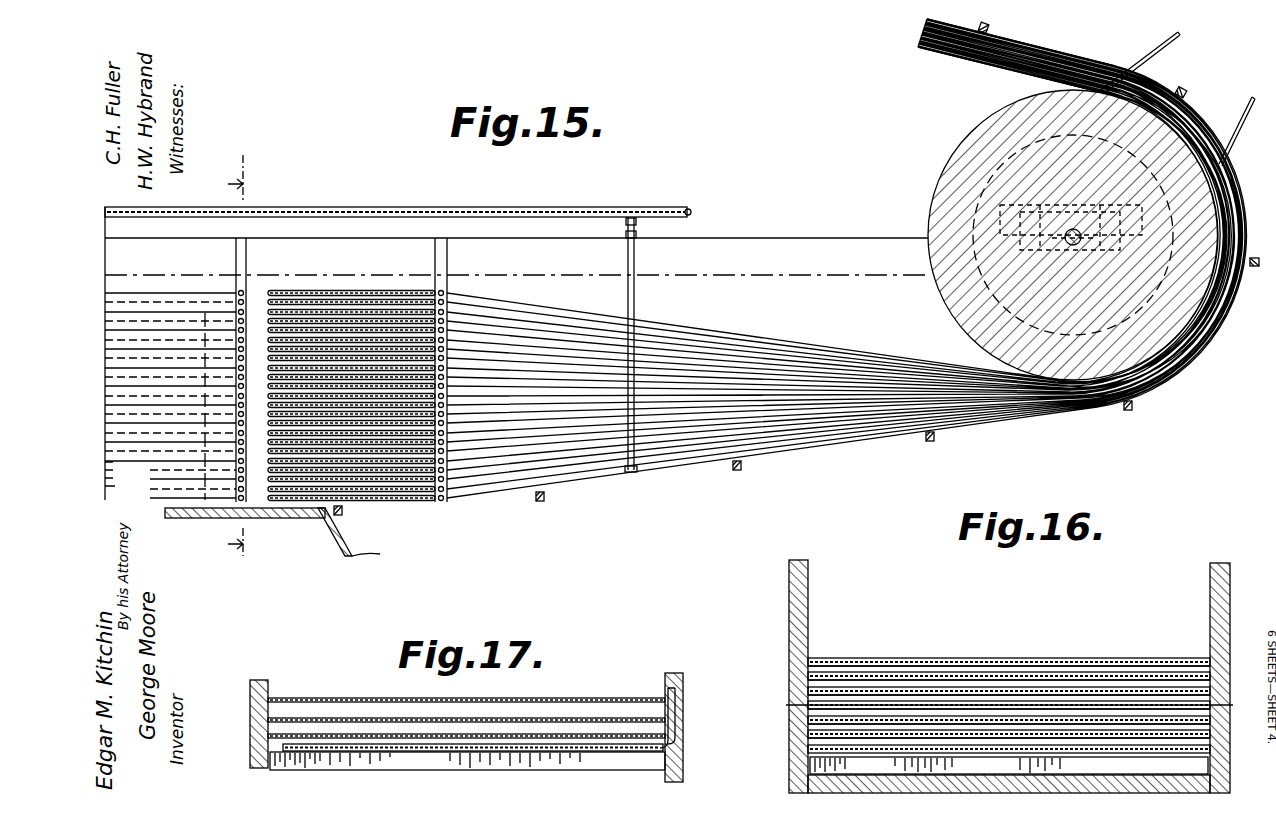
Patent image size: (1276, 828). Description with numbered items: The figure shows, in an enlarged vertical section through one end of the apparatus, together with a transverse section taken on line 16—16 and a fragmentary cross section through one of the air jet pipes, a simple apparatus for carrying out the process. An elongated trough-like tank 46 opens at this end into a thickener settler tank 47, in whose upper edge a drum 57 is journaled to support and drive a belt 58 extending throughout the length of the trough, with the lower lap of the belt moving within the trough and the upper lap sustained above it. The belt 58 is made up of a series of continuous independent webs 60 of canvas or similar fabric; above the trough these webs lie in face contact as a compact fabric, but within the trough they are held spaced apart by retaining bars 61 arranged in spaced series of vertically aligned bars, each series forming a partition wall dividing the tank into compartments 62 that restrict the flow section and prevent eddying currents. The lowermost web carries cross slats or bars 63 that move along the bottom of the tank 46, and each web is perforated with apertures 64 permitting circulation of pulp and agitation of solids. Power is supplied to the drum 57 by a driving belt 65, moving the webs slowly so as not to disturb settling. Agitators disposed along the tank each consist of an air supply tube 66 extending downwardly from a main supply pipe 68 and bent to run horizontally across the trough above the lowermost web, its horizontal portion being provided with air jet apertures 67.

In FIG. 15, the section line 16— 16 is at (222, 355).
In FIG. 15, the elongated trough-like tank 46 is at (292, 518).
In FIG. 16, the elongated trough-like tank 46 is at (1212, 594).
In FIG. 17, the elongated trough-like tank 46 is at (487, 727).
In FIG. 15, the thickener settler tank 47 is at (337, 548).
In FIG. 15, the drum 57 is at (972, 137).
In FIG. 15, the belt 58 is at (990, 60).
In FIG. 15, the webs 60 is at (370, 290).
In FIG. 16, the webs 60 is at (915, 660).
In FIG. 17, the webs 60 is at (590, 720).
In FIG. 15, the retaining bars 61 is at (447, 292).
In FIG. 16, the retaining bars 61 is at (995, 695).
In FIG. 15, the compartments 62 is at (172, 318).
In FIG. 15, the cross slats or bars 63 is at (552, 503).
In FIG. 16, the cross slats or bars 63 is at (1009, 766).
In FIG. 16, the apertures 64 is at (1112, 694).
In FIG. 15, the driving belt 65 is at (1176, 36).
In FIG. 15, the air supply tube 66 is at (636, 303).
In FIG. 17, the air supply tube 66 is at (470, 752).
In FIG. 17, the air jet apertures 67 is at (318, 742).
In FIG. 15, the main supply pipe 68 is at (543, 207).
In FIG. 17, the main supply pipe 68 is at (683, 705).